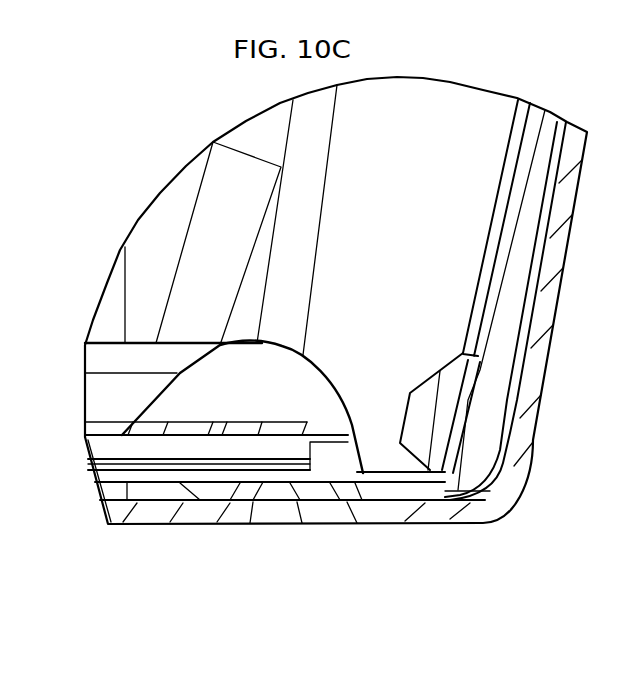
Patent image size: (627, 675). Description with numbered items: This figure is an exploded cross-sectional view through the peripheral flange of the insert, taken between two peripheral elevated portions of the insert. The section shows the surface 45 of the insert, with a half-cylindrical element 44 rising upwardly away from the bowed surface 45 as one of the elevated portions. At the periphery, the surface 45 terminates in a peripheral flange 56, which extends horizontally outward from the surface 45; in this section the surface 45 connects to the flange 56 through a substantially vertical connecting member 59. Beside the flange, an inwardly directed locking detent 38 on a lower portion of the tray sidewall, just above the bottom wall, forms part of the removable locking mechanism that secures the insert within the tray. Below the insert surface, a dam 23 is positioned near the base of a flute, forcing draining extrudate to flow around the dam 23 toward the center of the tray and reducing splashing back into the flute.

The dam 23 is at (315, 488).
The locking detent 38 is at (416, 429).
The half-cylindrical element 44 is at (283, 392).
The surface 45 is at (228, 425).
The peripheral flange 56 is at (393, 475).
The connecting member 59 is at (362, 437).